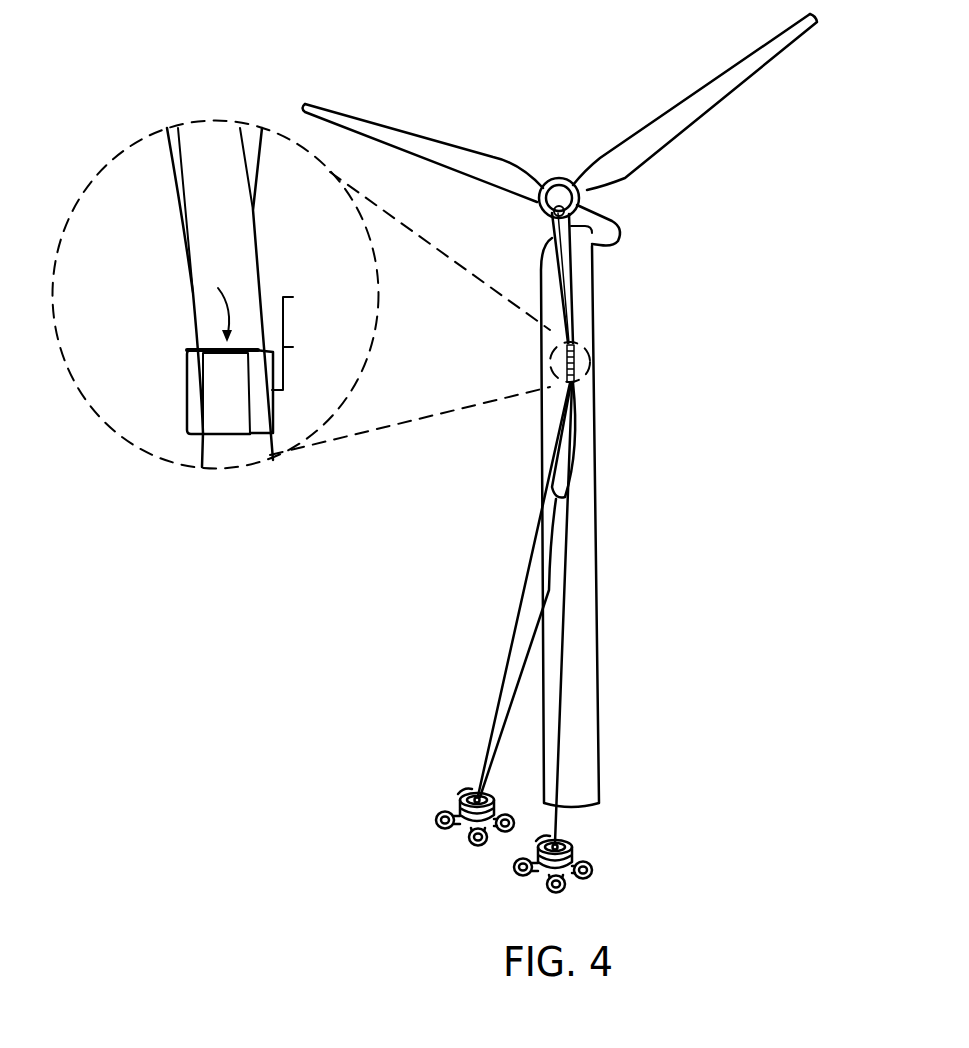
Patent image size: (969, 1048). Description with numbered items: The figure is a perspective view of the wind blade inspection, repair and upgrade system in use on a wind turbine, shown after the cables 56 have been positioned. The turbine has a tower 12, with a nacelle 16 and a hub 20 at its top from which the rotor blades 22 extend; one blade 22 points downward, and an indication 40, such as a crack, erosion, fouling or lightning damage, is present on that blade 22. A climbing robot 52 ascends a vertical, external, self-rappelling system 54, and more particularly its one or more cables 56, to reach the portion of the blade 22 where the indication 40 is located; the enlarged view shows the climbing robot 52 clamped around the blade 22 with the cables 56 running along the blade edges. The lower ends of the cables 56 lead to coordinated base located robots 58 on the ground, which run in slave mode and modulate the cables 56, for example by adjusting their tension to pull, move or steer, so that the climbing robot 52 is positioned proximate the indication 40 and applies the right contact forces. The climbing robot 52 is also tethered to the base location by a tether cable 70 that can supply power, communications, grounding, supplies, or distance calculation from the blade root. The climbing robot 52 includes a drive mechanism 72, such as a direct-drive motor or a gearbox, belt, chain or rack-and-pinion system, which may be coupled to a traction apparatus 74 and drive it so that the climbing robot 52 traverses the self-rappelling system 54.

The tower 12 is at (582, 700).
The nacelle 16 is at (615, 233).
The hub 20 is at (552, 217).
The rotor blade 22 is at (390, 120).
The indication 40 is at (222, 305).
The climbing robot 52 is at (590, 362).
The vertical, external, self-rappelling system 54 is at (683, 471).
The cables 56 is at (567, 557).
The coordinated base located robots 58 is at (442, 815).
The tether cable 70 is at (523, 688).
The drive mechanism 72 is at (305, 315).
The traction apparatus 74 is at (300, 362).